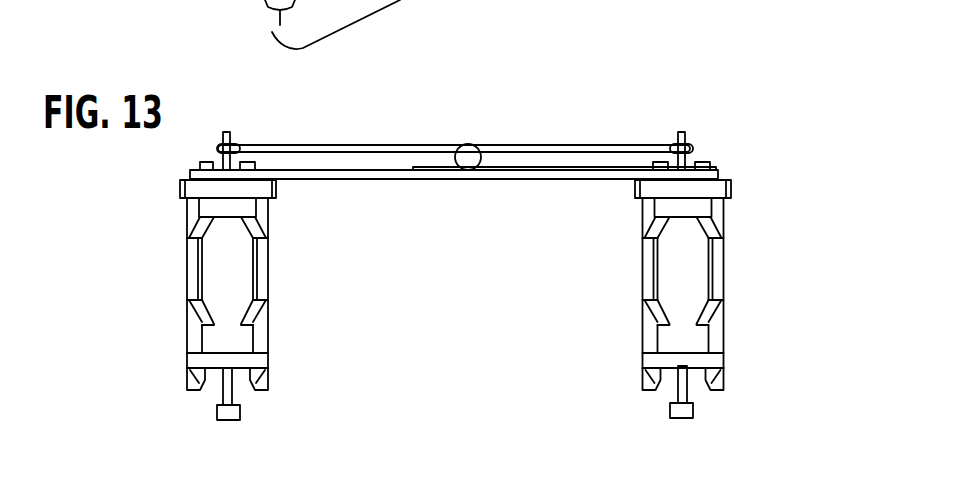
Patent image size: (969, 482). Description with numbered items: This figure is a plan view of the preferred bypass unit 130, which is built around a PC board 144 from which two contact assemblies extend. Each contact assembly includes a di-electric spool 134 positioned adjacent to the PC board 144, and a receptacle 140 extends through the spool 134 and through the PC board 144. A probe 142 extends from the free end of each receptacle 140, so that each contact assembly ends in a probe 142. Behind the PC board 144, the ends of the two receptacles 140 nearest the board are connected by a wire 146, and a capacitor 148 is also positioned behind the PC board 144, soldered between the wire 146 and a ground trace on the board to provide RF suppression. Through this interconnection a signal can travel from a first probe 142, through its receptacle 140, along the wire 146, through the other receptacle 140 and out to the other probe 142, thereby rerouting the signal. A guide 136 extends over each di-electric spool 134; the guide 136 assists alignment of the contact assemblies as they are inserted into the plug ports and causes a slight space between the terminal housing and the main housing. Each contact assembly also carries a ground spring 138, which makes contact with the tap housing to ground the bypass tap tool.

The bypass unit 130 is at (600, 100).
The di-electric spool 134 is at (275, 188).
The guide 136 is at (270, 332).
The ground spring 138 is at (260, 267).
The receptacle 140 is at (230, 133).
The probe 142 is at (220, 412).
The PC board 144 is at (720, 168).
The wire 146 is at (315, 147).
The capacitor 148 is at (467, 153).